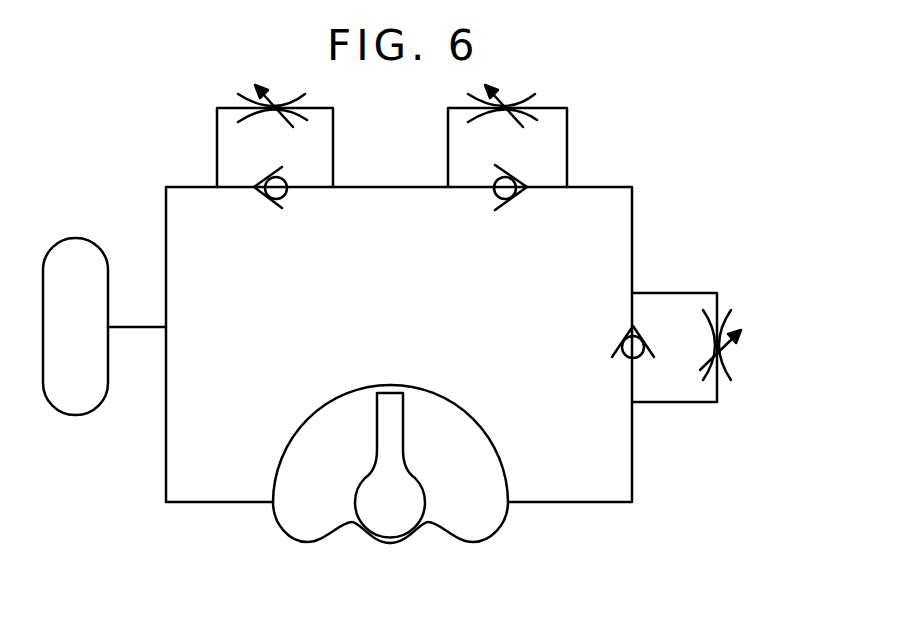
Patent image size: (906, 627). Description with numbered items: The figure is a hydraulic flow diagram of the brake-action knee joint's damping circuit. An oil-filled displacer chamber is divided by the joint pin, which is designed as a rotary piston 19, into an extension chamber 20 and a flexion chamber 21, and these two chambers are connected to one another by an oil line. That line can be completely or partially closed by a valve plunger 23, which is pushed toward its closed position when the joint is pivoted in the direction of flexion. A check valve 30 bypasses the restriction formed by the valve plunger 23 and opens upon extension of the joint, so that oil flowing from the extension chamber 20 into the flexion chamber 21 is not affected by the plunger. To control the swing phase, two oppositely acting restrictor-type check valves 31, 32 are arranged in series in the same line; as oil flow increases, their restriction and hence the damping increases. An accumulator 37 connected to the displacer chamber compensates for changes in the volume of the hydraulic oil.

The rotary piston 19 is at (393, 432).
The extension chamber 20 is at (342, 482).
The flexion chamber 21 is at (477, 482).
The valve plunger 23 is at (740, 355).
The check valve 30 is at (621, 352).
The restrictor-type check valve 31 is at (194, 148).
The restrictor-type check valve 32 is at (429, 153).
The accumulator 37 is at (95, 336).